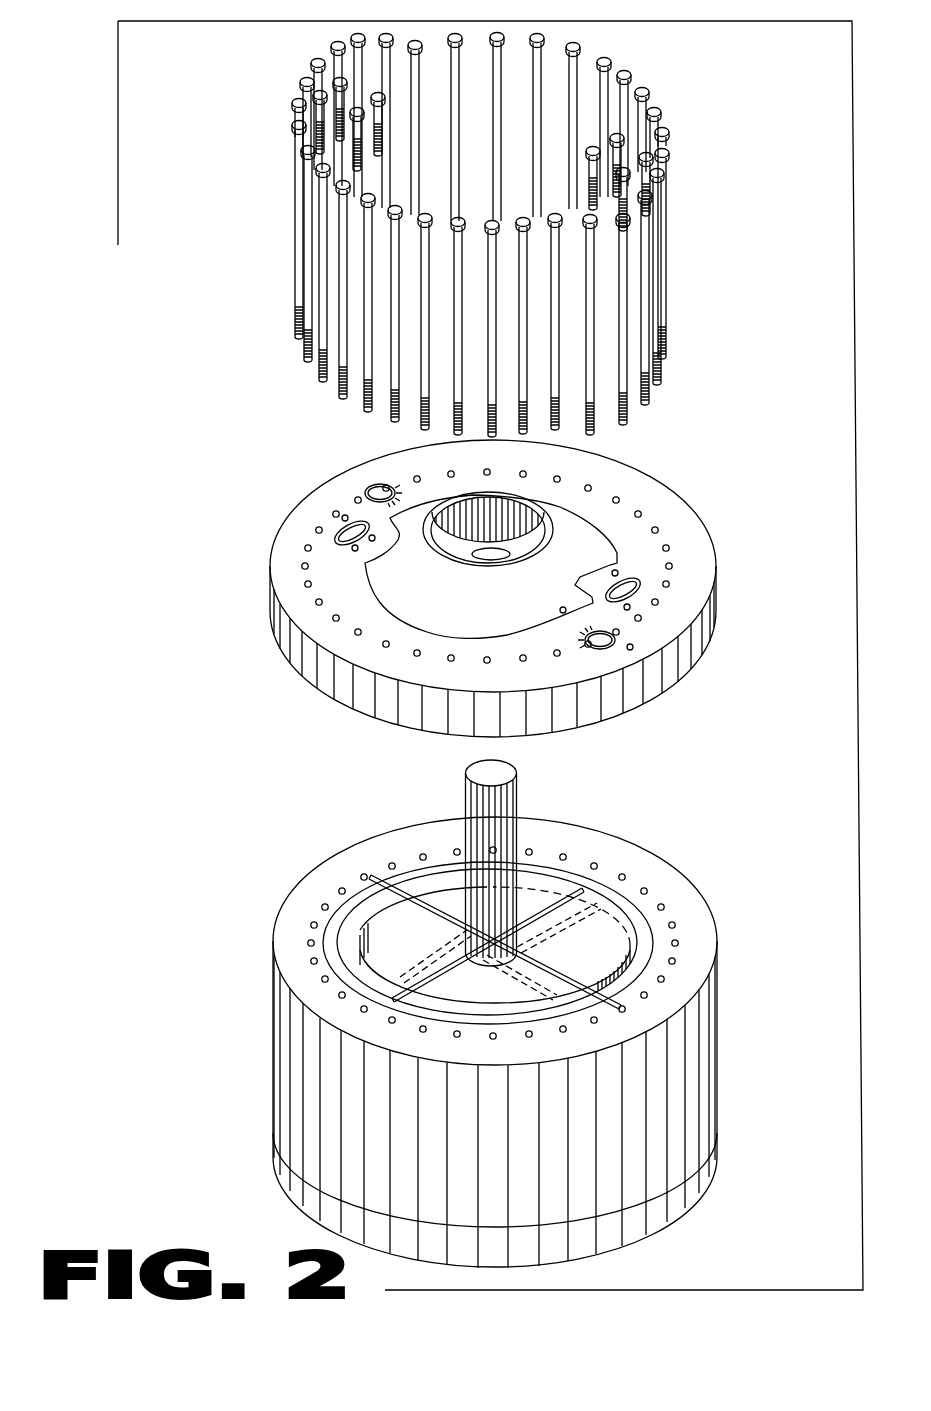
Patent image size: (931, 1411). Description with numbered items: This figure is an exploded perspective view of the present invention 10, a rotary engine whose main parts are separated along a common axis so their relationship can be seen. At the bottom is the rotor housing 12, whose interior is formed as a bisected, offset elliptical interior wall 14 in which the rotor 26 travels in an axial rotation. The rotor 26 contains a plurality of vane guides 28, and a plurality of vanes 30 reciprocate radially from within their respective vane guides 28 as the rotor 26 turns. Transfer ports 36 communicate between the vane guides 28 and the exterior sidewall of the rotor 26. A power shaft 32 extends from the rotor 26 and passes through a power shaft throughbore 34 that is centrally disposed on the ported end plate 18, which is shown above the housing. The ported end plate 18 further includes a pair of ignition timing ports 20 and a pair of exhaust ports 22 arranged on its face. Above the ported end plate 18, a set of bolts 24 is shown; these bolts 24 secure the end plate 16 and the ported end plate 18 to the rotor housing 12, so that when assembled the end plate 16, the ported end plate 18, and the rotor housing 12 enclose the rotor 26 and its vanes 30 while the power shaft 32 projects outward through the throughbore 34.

The present invention 10 is at (748, 218).
The rotor housing 12 is at (277, 1068).
The bisected, offset elliptical interior wall 14 is at (350, 913).
The end plate 16 is at (277, 1132).
The ported end plate 18 is at (297, 513).
The ignition timing ports 20 is at (376, 485).
The exhaust ports 22 is at (337, 540).
The bolts 24 is at (372, 268).
The rotor 26 is at (383, 927).
The vane guides 28 is at (633, 933).
The vanes 30 is at (378, 940).
The power shaft 32 is at (460, 793).
The power shaft throughbore 34 is at (505, 530).
The transfer ports 36 is at (562, 920).